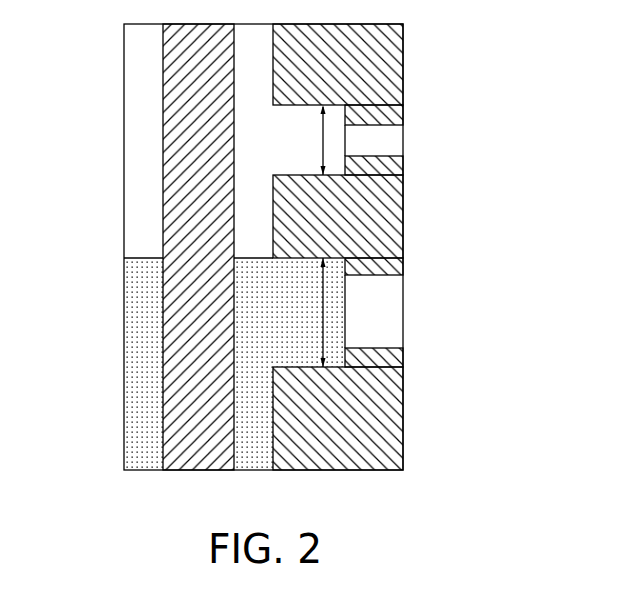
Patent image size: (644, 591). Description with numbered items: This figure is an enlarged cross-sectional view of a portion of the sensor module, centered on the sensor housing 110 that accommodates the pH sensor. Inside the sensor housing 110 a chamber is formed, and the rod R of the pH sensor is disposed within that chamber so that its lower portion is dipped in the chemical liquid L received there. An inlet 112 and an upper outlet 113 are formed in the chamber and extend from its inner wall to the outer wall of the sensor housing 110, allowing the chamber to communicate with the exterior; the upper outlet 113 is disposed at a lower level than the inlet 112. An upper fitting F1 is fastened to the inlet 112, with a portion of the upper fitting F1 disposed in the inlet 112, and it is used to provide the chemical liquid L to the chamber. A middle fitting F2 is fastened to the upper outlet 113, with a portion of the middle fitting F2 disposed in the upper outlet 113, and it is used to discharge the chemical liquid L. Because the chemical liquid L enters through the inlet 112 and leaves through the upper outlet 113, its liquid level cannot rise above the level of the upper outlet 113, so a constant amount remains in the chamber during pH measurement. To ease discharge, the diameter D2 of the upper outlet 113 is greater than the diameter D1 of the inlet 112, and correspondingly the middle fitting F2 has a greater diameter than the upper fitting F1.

The sensor housing 110 is at (390, 62).
The inlet 112 is at (286, 175).
The upper outlet 113 is at (286, 367).
The rod R is at (180, 89).
The chemical liquid L is at (137, 298).
The upper fitting F1 is at (406, 170).
The middle fitting F2 is at (406, 358).
The diameter of the inlet D1 is at (309, 140).
The diameter of the upper outlet D2 is at (309, 312).